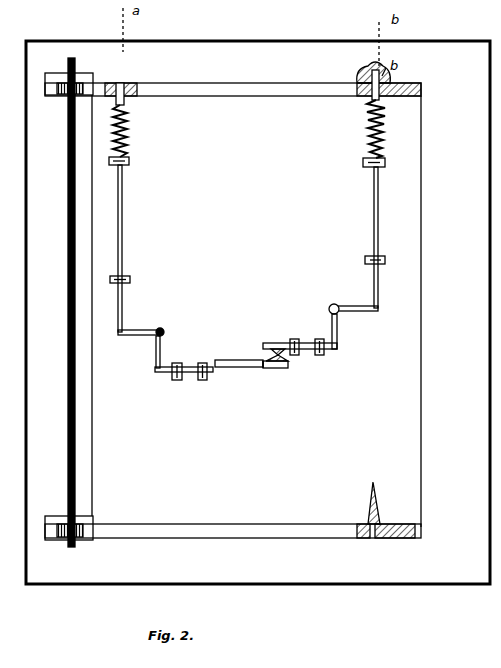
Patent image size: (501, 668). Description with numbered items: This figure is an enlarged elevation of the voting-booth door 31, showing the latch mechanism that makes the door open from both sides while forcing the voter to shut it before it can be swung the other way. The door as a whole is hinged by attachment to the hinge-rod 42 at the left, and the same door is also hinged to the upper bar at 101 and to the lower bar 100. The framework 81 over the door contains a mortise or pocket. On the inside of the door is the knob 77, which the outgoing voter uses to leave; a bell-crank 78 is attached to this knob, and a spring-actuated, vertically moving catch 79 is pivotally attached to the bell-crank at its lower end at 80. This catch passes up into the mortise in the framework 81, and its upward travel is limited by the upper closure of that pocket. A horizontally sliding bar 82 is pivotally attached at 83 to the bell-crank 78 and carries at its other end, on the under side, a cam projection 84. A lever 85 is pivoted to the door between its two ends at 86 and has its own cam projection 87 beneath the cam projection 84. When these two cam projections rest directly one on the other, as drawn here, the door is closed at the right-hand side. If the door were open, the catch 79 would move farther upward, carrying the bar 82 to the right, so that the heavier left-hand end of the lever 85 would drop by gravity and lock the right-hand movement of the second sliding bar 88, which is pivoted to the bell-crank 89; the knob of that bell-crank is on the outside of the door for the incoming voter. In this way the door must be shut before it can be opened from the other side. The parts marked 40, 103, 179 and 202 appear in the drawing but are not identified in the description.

The door 31 is at (189, 82).
The frame member 40 is at (260, 82).
The hinge-rod 42 is at (68, 285).
The framework 81 is at (361, 75).
The hinge point on upper bar 101 is at (368, 102).
The spring 179 is at (383, 148).
The left rod 103 is at (124, 220).
The spring-actuated vertically-moving catch 79 is at (373, 212).
The pivot of catch to bell-crank 80 is at (380, 310).
The bell-crank 78 is at (358, 321).
The knob 77 is at (329, 306).
The pivot of sliding bar to bell-crank 83 is at (337, 348).
The horizontally-sliding bar 82 is at (308, 342).
The cam projection 84 is at (280, 347).
The lever 85 is at (239, 360).
The lever pivot 86 is at (262, 368).
The cam projection of lever 87 is at (282, 369).
The sliding bar 88 is at (192, 378).
The bell-crank 89 is at (137, 330).
The lower bar 100 is at (248, 523).
The pointer spike 202 is at (366, 521).